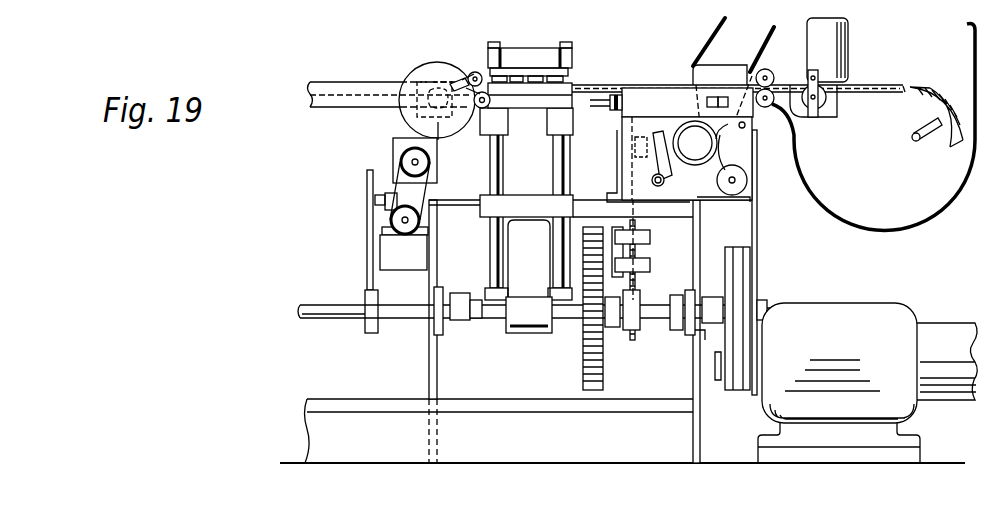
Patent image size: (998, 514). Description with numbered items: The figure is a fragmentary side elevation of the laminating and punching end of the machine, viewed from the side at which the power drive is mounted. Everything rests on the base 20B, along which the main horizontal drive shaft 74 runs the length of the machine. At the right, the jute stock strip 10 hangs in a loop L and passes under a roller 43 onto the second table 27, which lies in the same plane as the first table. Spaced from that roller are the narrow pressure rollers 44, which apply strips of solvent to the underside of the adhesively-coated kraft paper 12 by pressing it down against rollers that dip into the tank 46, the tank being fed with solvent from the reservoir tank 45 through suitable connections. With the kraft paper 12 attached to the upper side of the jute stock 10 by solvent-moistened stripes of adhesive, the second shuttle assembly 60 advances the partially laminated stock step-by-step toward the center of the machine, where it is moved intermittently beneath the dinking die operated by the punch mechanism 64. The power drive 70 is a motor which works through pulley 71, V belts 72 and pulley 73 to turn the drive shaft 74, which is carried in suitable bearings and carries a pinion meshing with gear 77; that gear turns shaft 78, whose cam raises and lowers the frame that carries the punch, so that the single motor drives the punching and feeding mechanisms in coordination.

The jute stock strip 10 is at (901, 228).
The adhesively-coated kraft paper 12 is at (930, 88).
The base 20B is at (560, 447).
The second table 27 is at (662, 84).
The roller 43 is at (770, 106).
The pressure rollers 44 is at (808, 71).
The reservoir tank 45 is at (850, 24).
The tank 46 is at (837, 107).
The second shuttle assembly 60 is at (698, 198).
The punch mechanism 64 is at (576, 45).
The power drive 70 is at (856, 346).
The pulley 71 is at (722, 386).
The V belts 72 is at (746, 268).
The pulley 73 is at (735, 249).
The main horizontal drive shaft 74 is at (657, 306).
The gear 77 is at (603, 354).
The shaft 78 is at (321, 306).
The loop L is at (941, 221).